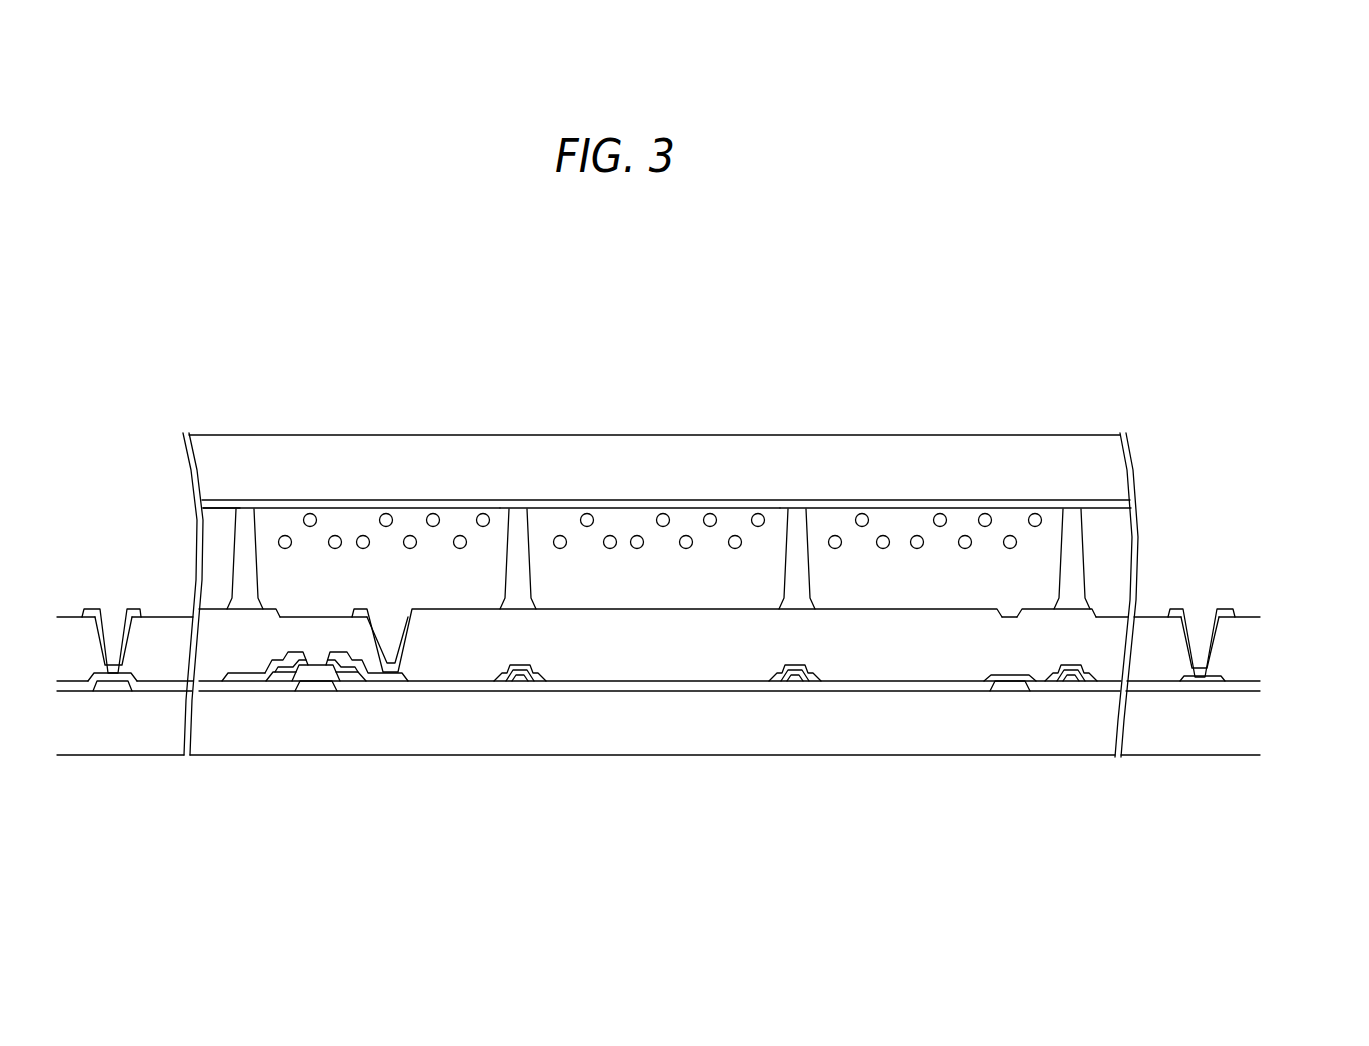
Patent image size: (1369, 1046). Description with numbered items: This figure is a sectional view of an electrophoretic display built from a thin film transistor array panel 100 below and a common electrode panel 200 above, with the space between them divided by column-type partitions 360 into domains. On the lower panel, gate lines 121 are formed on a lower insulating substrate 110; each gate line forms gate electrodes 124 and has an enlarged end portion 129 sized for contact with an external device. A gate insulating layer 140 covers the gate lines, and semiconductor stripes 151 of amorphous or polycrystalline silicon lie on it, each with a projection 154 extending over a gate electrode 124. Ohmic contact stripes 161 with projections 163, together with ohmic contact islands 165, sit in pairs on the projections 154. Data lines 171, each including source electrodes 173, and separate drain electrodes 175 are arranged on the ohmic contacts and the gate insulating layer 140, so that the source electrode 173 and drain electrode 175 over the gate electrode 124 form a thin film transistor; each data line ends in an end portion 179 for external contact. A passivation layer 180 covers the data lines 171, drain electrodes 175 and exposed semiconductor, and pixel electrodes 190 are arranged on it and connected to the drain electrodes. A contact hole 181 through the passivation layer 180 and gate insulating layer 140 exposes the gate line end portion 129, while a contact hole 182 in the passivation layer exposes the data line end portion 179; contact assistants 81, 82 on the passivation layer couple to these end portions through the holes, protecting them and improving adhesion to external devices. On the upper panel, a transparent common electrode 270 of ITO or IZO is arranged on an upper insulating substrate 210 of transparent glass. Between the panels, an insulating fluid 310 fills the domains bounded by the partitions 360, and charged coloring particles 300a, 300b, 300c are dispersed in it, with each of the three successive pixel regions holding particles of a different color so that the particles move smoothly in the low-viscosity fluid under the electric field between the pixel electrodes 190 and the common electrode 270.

The thin film transistor array panel 100 is at (711, 709).
The lower insulating substrate 110 is at (958, 740).
The gate line 121 is at (1007, 692).
The gate electrode 124 is at (315, 690).
The end portion of gate line 129 is at (115, 692).
The gate insulating layer 140 is at (906, 693).
The semiconductor stripe 151 is at (512, 690).
The projection of semiconductor stripe 154 is at (355, 675).
The ohmic contact stripe 161 is at (527, 688).
The projection of ohmic contact stripe 163 is at (277, 676).
The ohmic contact island 165 is at (338, 668).
The data line 171 is at (235, 688).
The source electrode 173 is at (292, 662).
The drain electrode 175 is at (399, 680).
The end portion of data line 179 is at (1202, 683).
The passivation layer 180 is at (600, 657).
The contact hole 181 is at (111, 634).
The contact hole 182 is at (1197, 633).
The pixel electrode 190 is at (695, 617).
The contact assistant 81 is at (146, 614).
The contact assistant 82 is at (1228, 610).
The common electrode panel 200 is at (721, 595).
The upper insulating substrate 210 is at (975, 457).
The common electrode 270 is at (672, 500).
The coloring particles 300a is at (387, 514).
The coloring particles 300b is at (587, 514).
The coloring particles 300c is at (862, 514).
The insulating fluid 310 is at (272, 520).
The partition 360 is at (503, 589).